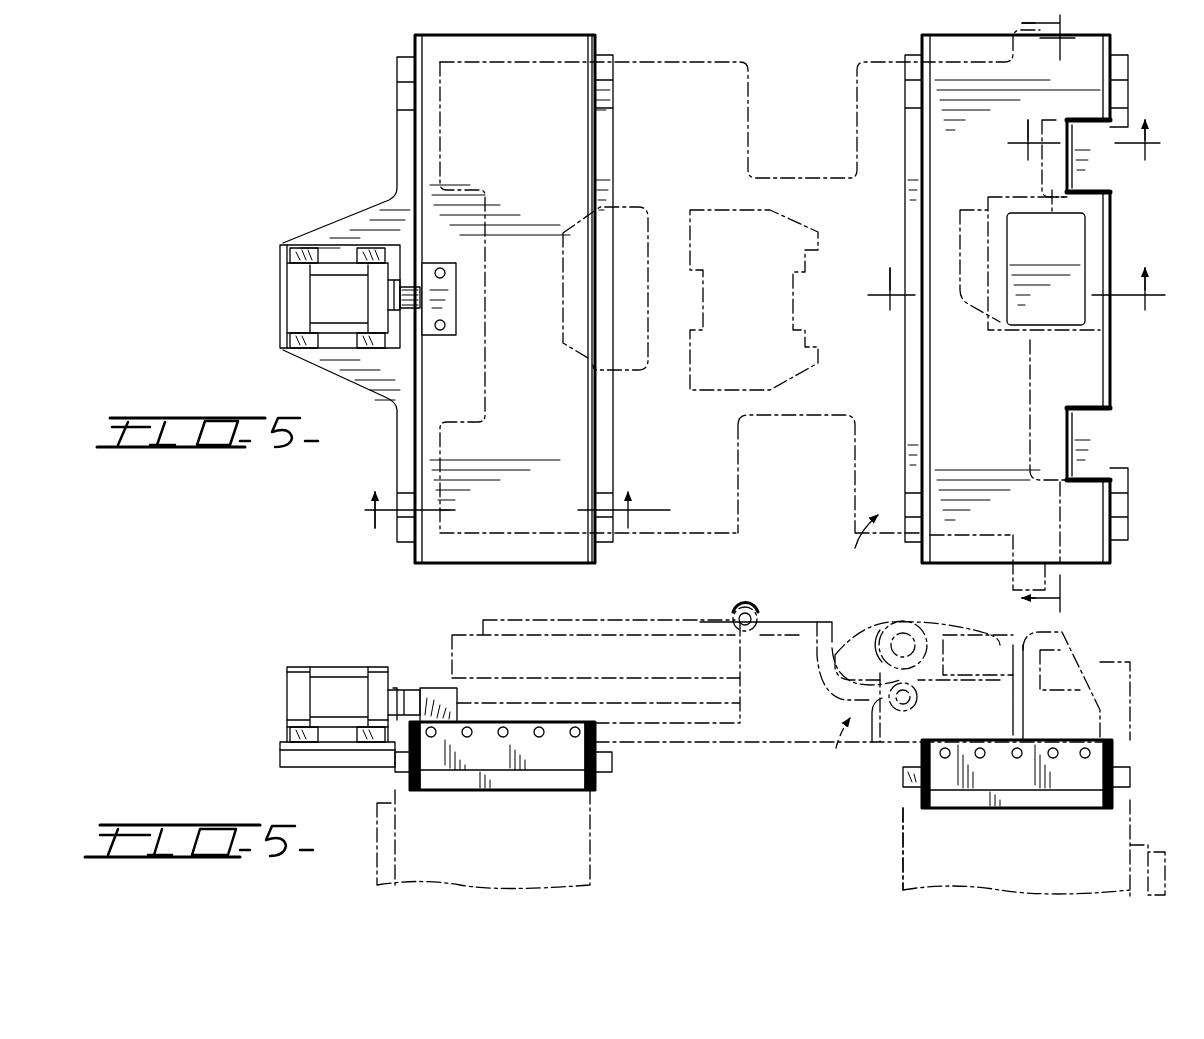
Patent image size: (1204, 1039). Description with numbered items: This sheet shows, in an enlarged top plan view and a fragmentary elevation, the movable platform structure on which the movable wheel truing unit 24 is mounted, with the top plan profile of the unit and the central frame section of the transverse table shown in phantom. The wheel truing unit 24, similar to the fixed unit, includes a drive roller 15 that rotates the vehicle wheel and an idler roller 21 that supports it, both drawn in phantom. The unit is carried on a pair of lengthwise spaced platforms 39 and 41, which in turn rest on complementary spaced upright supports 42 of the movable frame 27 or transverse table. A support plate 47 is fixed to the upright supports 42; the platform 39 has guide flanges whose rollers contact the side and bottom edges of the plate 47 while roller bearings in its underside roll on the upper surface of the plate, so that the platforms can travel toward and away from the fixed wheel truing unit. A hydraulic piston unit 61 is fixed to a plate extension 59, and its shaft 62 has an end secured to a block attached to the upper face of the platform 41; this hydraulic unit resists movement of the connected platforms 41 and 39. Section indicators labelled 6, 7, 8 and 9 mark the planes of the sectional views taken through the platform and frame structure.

In FIG. 5, the drive roller 15 is at (905, 625).
In FIG. 5, the idler roller 21 is at (752, 606).
In FIG. 4, the wheel truing unit 24 is at (870, 543).
In FIG. 5, the wheel truing unit 24 is at (838, 749).
In FIG. 4, the frame 27 is at (603, 547).
In FIG. 5, the frame 27 is at (900, 840).
In FIG. 4, the platform 39 is at (1090, 392).
In FIG. 5, the platform 39 is at (1090, 777).
In FIG. 4, the platform 41 is at (535, 545).
In FIG. 5, the platform 41 is at (578, 757).
In FIG. 5, the upright supports 42 is at (560, 832).
In FIG. 4, the support plate 47 is at (916, 441).
In FIG. 5, the support plate 47 is at (905, 778).
In FIG. 4, the plate extension 59 is at (362, 370).
In FIG. 4, the hydraulic piston unit 61 is at (300, 300).
In FIG. 5, the hydraulic piston unit 61 is at (350, 717).
In FIG. 4, the shaft 62 is at (408, 292).
In FIG. 5, the shaft 62 is at (438, 705).
In FIG. 4, the section line 6- 6 is at (1057, 312).
In FIG. 4, the section line 7- 7 is at (510, 516).
In FIG. 4, the section line 8- 8 is at (1085, 149).
In FIG. 4, the section line 9- 9 is at (1016, 298).